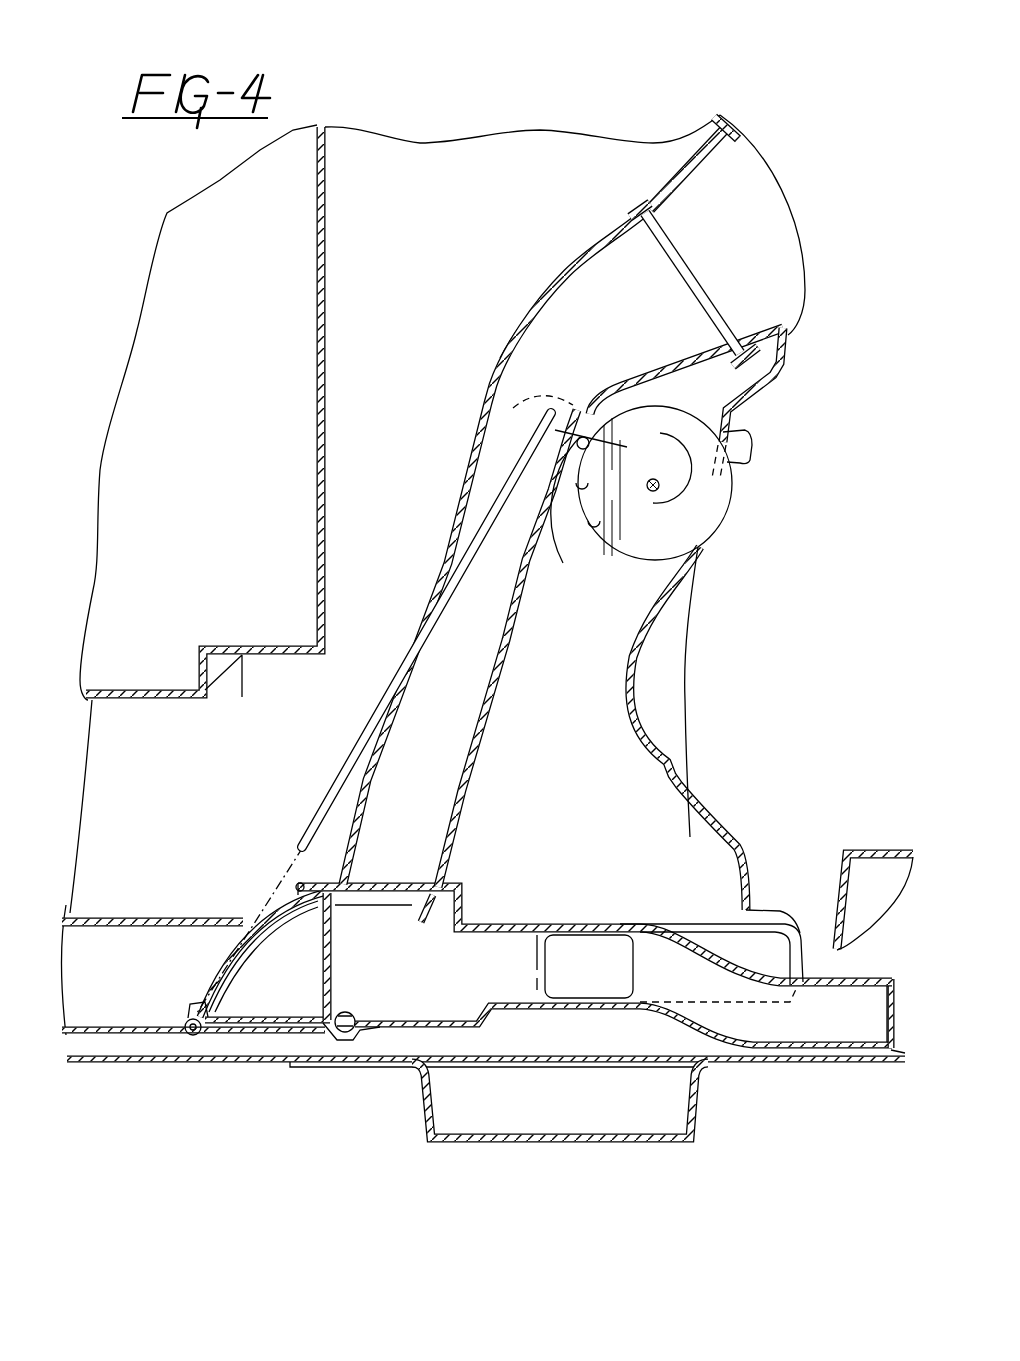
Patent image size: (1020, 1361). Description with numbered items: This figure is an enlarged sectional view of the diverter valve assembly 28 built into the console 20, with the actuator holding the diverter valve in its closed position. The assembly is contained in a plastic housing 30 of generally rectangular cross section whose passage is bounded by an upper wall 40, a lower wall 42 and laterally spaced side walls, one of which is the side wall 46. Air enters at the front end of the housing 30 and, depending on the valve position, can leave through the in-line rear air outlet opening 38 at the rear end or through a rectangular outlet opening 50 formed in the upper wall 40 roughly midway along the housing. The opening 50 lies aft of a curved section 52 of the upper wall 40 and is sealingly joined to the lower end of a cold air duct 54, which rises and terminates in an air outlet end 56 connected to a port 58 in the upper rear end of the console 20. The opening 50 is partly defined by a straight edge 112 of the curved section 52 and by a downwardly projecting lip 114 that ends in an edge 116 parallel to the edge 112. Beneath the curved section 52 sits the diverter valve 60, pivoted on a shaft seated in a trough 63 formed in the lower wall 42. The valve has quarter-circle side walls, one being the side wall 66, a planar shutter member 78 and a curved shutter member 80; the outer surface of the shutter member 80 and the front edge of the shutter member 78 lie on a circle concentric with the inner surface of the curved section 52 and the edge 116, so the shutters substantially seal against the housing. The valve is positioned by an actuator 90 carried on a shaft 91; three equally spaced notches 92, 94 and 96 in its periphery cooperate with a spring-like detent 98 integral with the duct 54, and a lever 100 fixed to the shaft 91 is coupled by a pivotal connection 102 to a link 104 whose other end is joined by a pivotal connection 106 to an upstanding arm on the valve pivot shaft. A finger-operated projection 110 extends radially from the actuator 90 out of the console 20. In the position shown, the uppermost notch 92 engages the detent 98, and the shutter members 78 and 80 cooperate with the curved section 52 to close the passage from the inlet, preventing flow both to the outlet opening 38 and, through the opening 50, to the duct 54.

The console 20 is at (756, 106).
The diverter valve assembly 28 is at (407, 588).
The housing 30 is at (98, 914).
The rear air outlet opening 38 is at (893, 1000).
The upper wall 40 is at (137, 918).
The lower wall 42 is at (157, 1064).
The side wall 46 is at (108, 988).
The rectangular outlet opening 50 is at (433, 880).
The curved section 52 is at (296, 884).
The cold air duct 54 is at (521, 318).
The air outlet end 56 is at (632, 203).
The port 58 is at (733, 142).
The diverter valve 60 is at (378, 972).
The trough 63 is at (370, 1043).
The side wall 66 is at (280, 997).
The planar shutter member 78 is at (345, 970).
The shutter member 80 is at (213, 972).
The actuator 90 is at (733, 505).
The shaft 91 is at (587, 430).
The notch 92 is at (580, 437).
The notch 94 is at (563, 523).
The notch 96 is at (597, 527).
The detent 98 is at (590, 440).
The lever 100 is at (512, 390).
The pivotal connection 102 is at (545, 420).
The link 104 is at (390, 675).
The pivotal connection 106 is at (190, 1022).
The projection 110 is at (755, 440).
The straight edge 112 is at (415, 880).
The lip 114 is at (418, 900).
The edge 116 is at (424, 922).